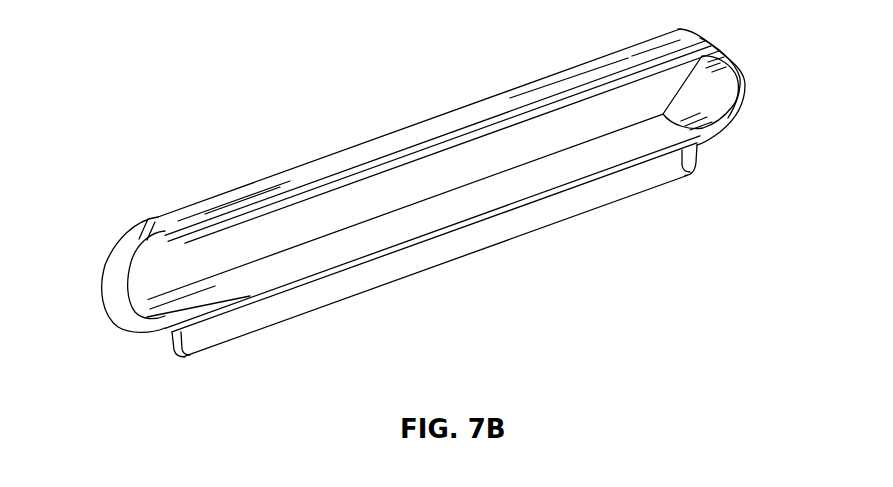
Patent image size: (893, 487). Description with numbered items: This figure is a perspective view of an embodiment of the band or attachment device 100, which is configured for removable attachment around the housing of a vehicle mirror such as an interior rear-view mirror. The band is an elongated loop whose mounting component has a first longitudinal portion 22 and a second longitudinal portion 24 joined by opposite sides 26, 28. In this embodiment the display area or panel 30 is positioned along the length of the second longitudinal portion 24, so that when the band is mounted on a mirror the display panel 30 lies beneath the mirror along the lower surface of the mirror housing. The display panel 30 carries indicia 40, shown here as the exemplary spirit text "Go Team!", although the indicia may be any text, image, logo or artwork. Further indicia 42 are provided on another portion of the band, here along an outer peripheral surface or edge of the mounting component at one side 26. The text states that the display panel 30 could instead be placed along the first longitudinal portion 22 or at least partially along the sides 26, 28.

The band or attachment device 100 is at (235, 93).
The first longitudinal portion 22 is at (417, 153).
The second longitudinal portion 24 is at (423, 220).
The side 26 is at (140, 307).
The side 28 is at (717, 83).
The display area or panel 30 is at (613, 197).
The indicia 40 is at (453, 257).
The indicia 42 is at (110, 270).